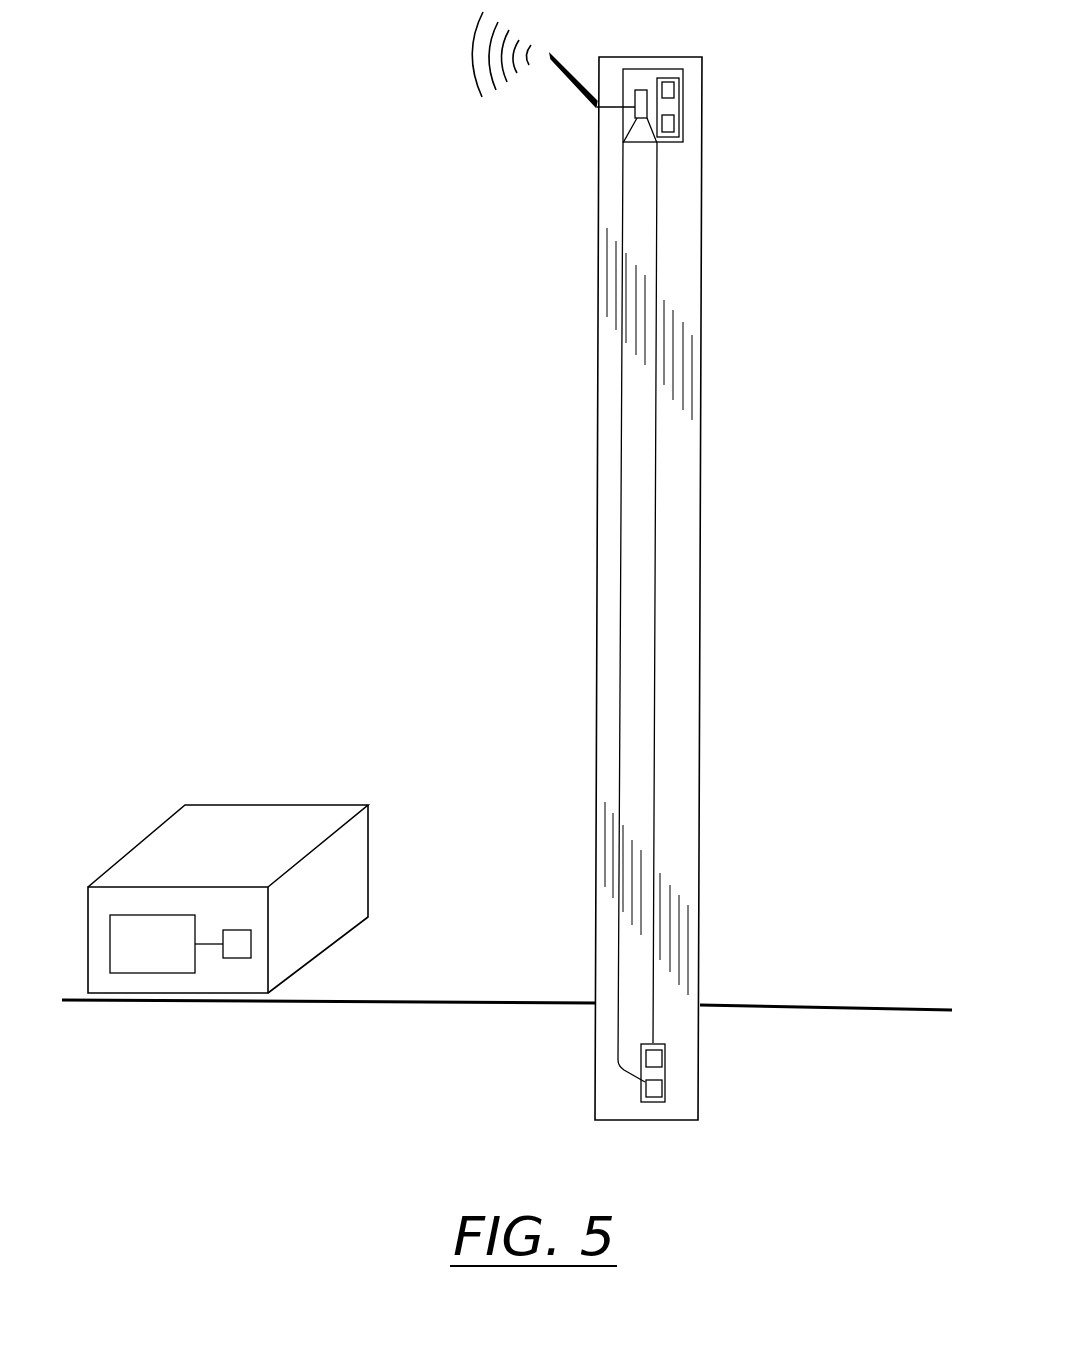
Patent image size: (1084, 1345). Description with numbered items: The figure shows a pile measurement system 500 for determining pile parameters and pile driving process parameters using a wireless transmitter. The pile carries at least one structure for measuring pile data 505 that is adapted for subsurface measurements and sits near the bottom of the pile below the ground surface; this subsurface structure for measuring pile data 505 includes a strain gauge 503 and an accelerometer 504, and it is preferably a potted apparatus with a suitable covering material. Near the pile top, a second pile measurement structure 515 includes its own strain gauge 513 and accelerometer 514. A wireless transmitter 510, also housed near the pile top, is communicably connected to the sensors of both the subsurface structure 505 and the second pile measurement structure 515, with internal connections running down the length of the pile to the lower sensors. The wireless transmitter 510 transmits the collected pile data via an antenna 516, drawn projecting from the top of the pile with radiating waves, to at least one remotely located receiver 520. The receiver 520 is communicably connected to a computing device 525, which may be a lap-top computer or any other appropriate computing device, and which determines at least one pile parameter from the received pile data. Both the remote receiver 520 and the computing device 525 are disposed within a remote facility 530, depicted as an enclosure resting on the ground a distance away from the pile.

The system 500 is at (380, 462).
The strain gauge 503 is at (658, 1052).
The accelerometer 504 is at (658, 1086).
The structure for measuring pile data 505 is at (643, 1048).
The wireless transmitter 510 is at (643, 92).
The strain gauge 513 is at (670, 124).
The accelerometer 514 is at (668, 90).
The second pile measurement structure 515 is at (670, 141).
The antenna 516 is at (575, 88).
The receiver 520 is at (242, 935).
The computing device 525 is at (173, 960).
The remote facility 530 is at (185, 827).